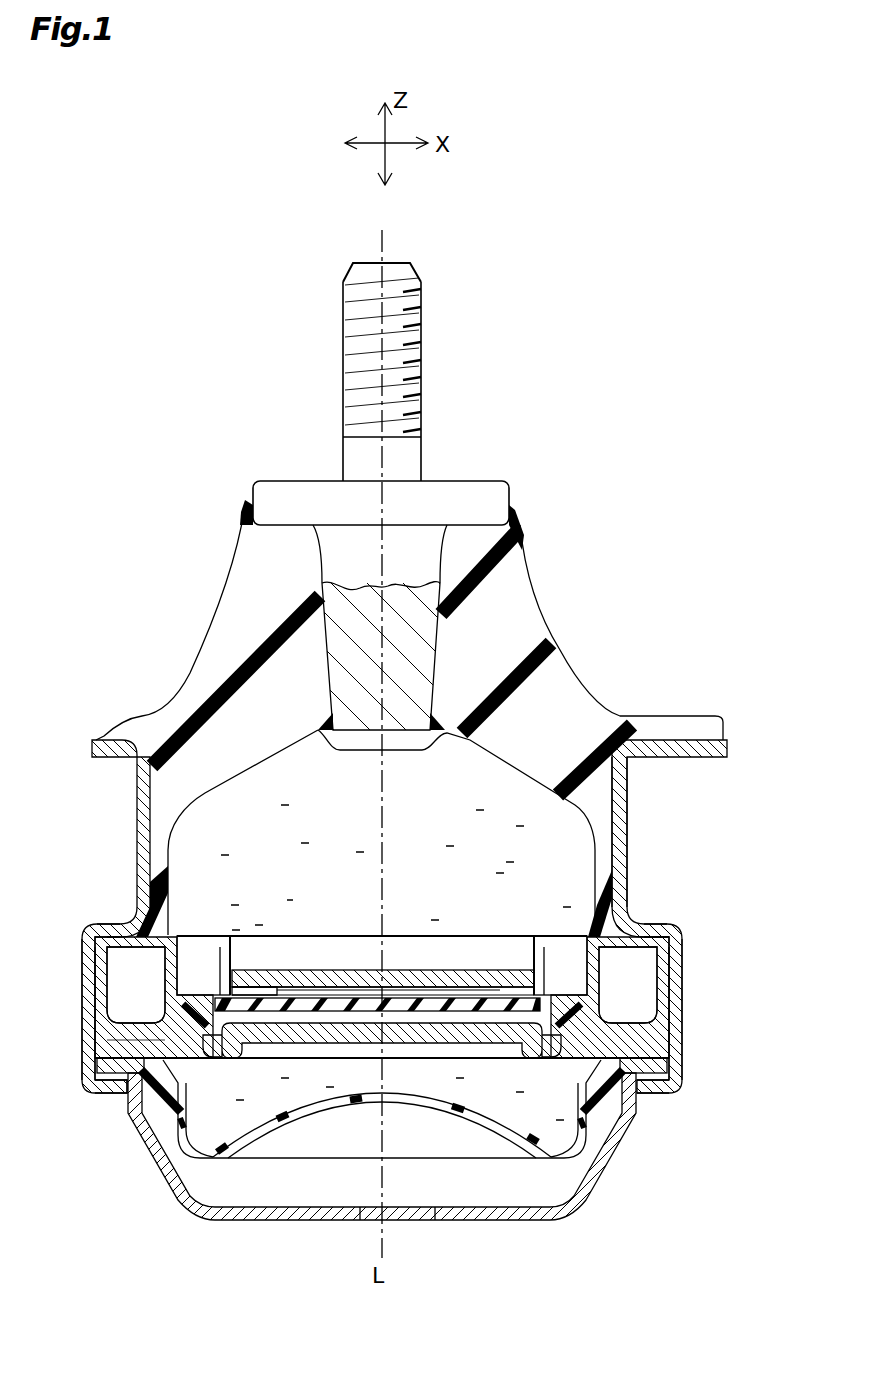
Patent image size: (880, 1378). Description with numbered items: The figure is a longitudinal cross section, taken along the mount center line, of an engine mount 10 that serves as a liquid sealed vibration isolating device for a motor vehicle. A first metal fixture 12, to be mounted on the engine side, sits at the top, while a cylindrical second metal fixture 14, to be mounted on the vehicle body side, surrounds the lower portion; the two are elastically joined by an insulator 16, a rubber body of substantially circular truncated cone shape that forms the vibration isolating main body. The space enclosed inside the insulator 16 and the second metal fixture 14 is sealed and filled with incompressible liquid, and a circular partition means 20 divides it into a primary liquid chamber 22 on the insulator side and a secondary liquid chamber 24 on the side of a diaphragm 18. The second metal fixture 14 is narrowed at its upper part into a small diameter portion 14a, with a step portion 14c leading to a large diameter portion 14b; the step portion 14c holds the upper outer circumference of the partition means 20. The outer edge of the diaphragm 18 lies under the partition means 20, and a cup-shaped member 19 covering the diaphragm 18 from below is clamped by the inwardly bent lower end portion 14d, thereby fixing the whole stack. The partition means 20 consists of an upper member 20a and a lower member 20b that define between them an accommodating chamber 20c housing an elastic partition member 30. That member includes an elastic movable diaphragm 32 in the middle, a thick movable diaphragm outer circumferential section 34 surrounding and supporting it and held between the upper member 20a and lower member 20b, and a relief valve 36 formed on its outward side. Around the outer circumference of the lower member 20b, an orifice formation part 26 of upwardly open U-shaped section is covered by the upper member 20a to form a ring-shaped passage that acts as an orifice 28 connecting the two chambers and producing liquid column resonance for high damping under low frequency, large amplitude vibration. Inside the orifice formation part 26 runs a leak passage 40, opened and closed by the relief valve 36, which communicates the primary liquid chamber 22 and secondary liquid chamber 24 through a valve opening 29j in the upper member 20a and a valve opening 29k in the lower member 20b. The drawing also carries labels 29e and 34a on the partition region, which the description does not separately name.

The engine mount 10 is at (207, 385).
The first metal fixture 12 is at (480, 490).
The second metal fixture 14 is at (126, 797).
The small diameter portion 14a is at (627, 800).
The large diameter portion 14b is at (683, 997).
The step portion 14c is at (647, 920).
The inwardly bent lower end portion 14d is at (653, 1097).
The insulator 16 is at (537, 613).
The diaphragm 18 is at (263, 1130).
The cup-shaped member 19 is at (517, 1220).
The partition means 20 is at (382, 935).
The upper member 20a is at (404, 968).
The lower member 20b is at (470, 1035).
The accommodating chamber 20c is at (300, 988).
The primary liquid chamber 22 is at (366, 835).
The secondary liquid chamber 24 is at (460, 1092).
The orifice formation part 26 is at (120, 1050).
The orifice 28 is at (148, 990).
The rubber layer on partition 29e is at (270, 990).
The valve opening 29j is at (152, 893).
The valve opening 29k is at (197, 1085).
The elastic partition member 30 is at (337, 1003).
The elastic movable diaphragm 32 is at (503, 1000).
The movable diaphragm outer circumferential section 34 is at (394, 974).
The upper flange of housing 34a is at (197, 938).
The relief valve 36 is at (160, 1025).
The leak passage 40 is at (165, 1105).